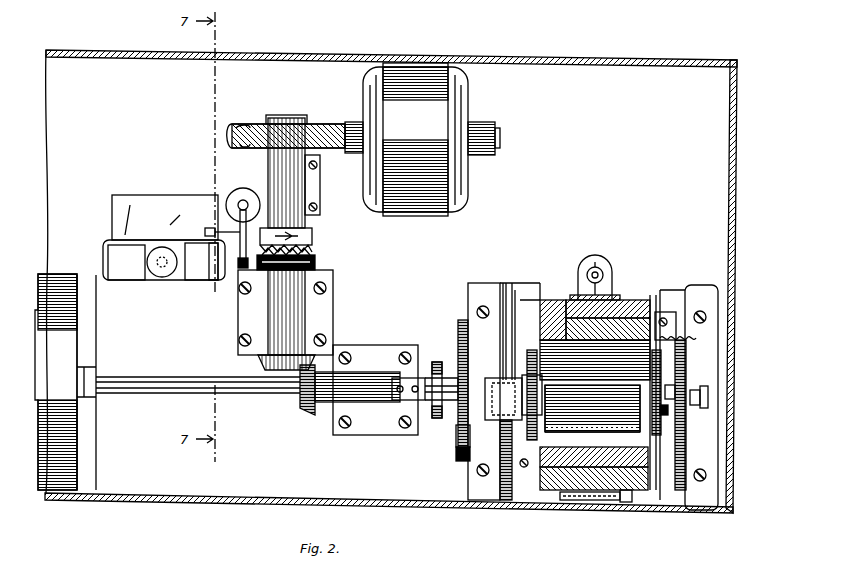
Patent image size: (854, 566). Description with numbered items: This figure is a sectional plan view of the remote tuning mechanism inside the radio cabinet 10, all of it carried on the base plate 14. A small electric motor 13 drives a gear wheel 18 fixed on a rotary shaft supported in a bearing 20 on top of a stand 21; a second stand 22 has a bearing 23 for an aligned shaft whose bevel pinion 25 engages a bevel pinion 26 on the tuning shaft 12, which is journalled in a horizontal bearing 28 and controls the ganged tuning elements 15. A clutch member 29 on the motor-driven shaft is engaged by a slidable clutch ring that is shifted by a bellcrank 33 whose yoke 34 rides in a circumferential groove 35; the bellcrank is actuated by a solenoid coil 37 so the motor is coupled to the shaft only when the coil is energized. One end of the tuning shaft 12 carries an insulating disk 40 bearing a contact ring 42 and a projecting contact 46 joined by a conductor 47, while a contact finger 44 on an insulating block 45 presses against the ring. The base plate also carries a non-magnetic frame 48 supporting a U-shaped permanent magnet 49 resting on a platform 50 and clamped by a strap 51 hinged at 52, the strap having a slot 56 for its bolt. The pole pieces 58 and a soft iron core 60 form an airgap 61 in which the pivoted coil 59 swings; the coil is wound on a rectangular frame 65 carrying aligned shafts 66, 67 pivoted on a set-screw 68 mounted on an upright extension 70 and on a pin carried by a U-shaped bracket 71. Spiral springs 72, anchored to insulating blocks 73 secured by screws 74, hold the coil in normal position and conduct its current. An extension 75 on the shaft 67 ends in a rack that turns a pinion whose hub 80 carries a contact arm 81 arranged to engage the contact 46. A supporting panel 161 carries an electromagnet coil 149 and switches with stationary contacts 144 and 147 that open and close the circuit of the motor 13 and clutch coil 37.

The cabinet 10 is at (712, 58).
The tuning shaft 12 is at (150, 381).
The electric motor 13 is at (422, 139).
The base plate 14 is at (633, 171).
The tuning elements 15 is at (65, 382).
The gear wheel 18 is at (310, 124).
The bearing 20 is at (300, 200).
The stand 21 is at (316, 184).
The second stand 22 is at (333, 332).
The bearing 23 is at (295, 312).
The bevel pinion 25 is at (283, 370).
The bevel pinion 26 is at (307, 410).
The horizontal bearing 28 is at (370, 380).
The clutch member 29 is at (315, 238).
The bellcrank 33 is at (228, 198).
The yoke 34 is at (243, 270).
The circumferential groove 35 is at (317, 262).
The solenoid coil 37 is at (243, 189).
The insulating disk 40 is at (463, 320).
The contact ring 42 is at (438, 362).
The contact finger 44 is at (428, 400).
The insulating block 45 is at (415, 365).
The contact 46 is at (460, 445).
The conductor 47 is at (446, 400).
The non-magnetic frame 48 is at (482, 293).
The permanent magnet 49 is at (657, 288).
The platform 50 is at (548, 292).
The strap 51 is at (625, 300).
The hinge 52 is at (580, 500).
The slot 56 is at (600, 262).
The pole pieces 58 is at (570, 300).
The pivoted coil 59 is at (556, 320).
The cylindrical core 60 is at (595, 386).
The airgap 61 is at (592, 416).
The coil frame 65 is at (668, 382).
The shaft 66 is at (514, 330).
The shaft 67 is at (665, 420).
The set-screw 68 is at (695, 405).
The upright extension 70 is at (690, 395).
The U-shaped bracket 71 is at (505, 300).
The spiral springs 72 is at (532, 350).
The insulating blocks 73 is at (668, 310).
The screws 74 is at (672, 318).
The extension 75 is at (500, 422).
The hub 80 is at (486, 378).
The contact arm 81 is at (468, 462).
The stationary contact 144 is at (118, 280).
The stationary contact 147 is at (195, 280).
The electromagnet coil 149 is at (161, 278).
The supporting panel 161 is at (130, 235).